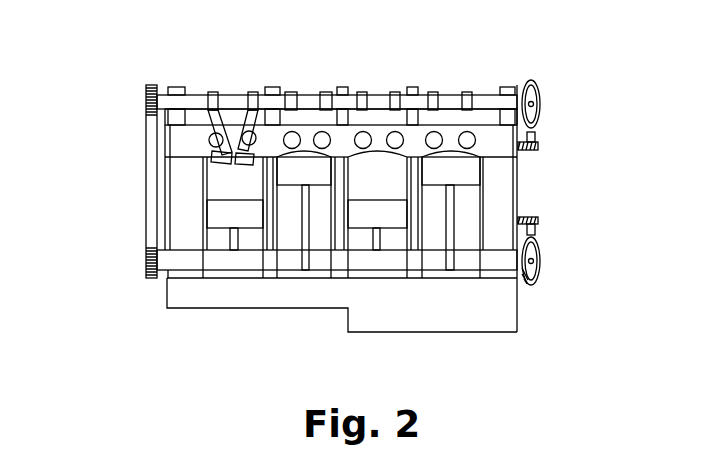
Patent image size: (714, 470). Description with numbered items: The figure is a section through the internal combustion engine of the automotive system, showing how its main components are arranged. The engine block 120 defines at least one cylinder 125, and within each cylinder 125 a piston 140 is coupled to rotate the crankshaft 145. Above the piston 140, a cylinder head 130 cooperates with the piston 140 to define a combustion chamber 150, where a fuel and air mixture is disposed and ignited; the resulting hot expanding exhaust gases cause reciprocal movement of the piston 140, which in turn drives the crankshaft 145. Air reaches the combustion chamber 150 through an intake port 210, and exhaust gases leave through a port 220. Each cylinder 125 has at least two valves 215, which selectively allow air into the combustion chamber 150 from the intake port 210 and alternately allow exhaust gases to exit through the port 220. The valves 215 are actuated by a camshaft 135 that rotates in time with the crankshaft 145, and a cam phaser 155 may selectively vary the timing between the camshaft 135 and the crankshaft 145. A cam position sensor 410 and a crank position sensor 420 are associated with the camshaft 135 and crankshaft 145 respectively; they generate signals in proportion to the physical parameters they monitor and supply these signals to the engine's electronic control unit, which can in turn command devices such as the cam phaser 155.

The engine block 120 is at (170, 202).
The cylinder 125 is at (345, 187).
The cylinder head 130 is at (168, 147).
The camshaft 135 is at (230, 95).
The piston 140 is at (383, 213).
The crankshaft 145 is at (200, 263).
The combustion chamber 150 is at (453, 155).
The cam phaser 155 is at (146, 95).
The intake port 210 is at (367, 133).
The valves 215 is at (233, 154).
The exhaust port 220 is at (317, 132).
The cam position sensor 410 is at (537, 145).
The crank position sensor 420 is at (537, 225).